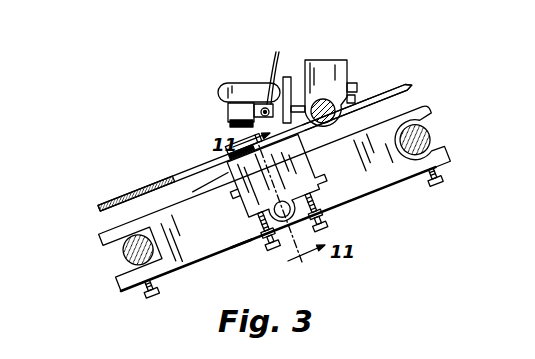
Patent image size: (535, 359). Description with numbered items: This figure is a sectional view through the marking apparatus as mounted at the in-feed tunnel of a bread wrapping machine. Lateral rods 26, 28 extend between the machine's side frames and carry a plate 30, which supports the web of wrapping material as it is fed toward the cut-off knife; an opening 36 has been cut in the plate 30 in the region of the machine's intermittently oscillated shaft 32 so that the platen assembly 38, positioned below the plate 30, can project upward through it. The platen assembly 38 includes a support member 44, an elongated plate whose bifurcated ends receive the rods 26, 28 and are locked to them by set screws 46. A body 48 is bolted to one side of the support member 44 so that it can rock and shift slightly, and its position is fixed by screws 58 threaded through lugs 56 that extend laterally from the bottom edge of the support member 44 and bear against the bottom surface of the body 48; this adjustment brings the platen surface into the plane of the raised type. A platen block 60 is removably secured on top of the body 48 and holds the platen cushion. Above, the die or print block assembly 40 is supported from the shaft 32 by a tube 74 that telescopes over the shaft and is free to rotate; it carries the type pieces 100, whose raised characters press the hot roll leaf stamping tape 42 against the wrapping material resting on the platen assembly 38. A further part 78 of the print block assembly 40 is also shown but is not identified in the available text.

The lateral rod 26 is at (122, 255).
The lateral rod 28 is at (434, 139).
The plate 30 is at (406, 89).
The intermittently oscillated shaft 32 is at (352, 108).
The opening 36 is at (197, 177).
The platen assembly 38 is at (240, 228).
The die or print block assembly 40 is at (294, 47).
The hot roll leaf stamping tape 42 is at (228, 155).
The support member 44 is at (384, 183).
The set screws 46 is at (147, 297).
The body 48 is at (316, 176).
The lugs 56 is at (260, 251).
The screws 58 is at (276, 250).
The platen block 60 is at (193, 193).
The tube 74 is at (325, 100).
The lever arm 78 is at (256, 86).
The type pieces 100 is at (228, 127).